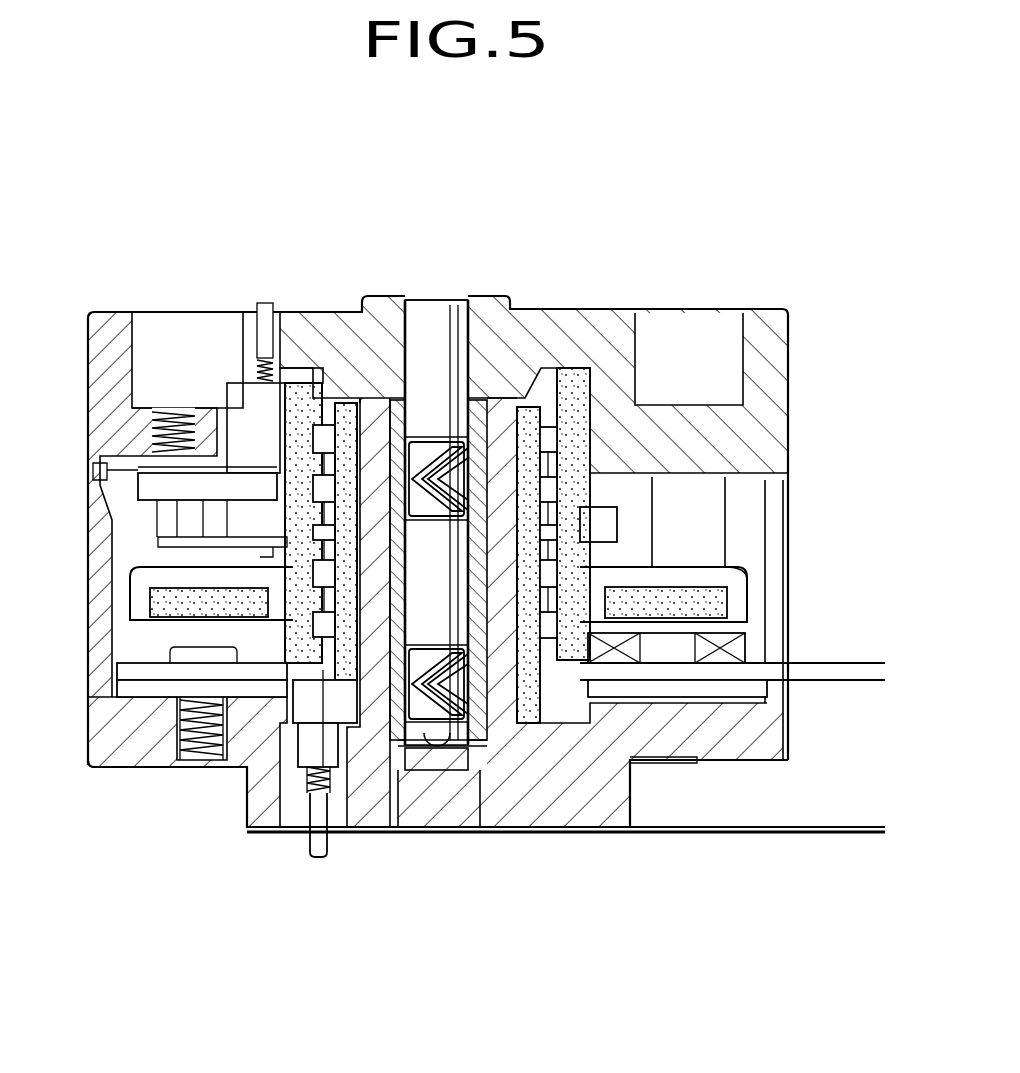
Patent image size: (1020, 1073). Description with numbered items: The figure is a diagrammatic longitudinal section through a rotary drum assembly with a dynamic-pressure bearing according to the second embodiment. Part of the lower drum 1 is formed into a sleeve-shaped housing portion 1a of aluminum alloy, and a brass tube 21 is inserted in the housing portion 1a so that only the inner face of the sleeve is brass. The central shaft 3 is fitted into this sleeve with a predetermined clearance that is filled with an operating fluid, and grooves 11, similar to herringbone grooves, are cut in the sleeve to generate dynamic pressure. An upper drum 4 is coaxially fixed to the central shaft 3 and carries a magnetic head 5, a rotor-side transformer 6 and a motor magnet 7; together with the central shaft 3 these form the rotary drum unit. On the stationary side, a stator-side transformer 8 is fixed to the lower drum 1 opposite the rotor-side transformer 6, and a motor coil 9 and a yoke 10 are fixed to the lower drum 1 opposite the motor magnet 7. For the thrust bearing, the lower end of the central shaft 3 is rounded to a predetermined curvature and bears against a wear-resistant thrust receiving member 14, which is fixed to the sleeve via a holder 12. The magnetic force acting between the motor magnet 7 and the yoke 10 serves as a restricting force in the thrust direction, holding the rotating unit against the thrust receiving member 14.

The lower drum 1 is at (763, 743).
The housing portion 1a is at (373, 430).
The central shaft 3 is at (437, 333).
The upper drum 4 is at (730, 435).
The magnetic head 5 is at (167, 513).
The rotor-side transformer 6 is at (298, 420).
The motor magnet 7 is at (177, 602).
The stator-side transformer 8 is at (343, 593).
The motor coil 9 is at (737, 647).
The yoke 10 is at (713, 690).
The grooves 11 is at (440, 339).
The holder 12 is at (465, 793).
The thrust receiving member 14 is at (437, 752).
The brass tube 21 is at (398, 640).